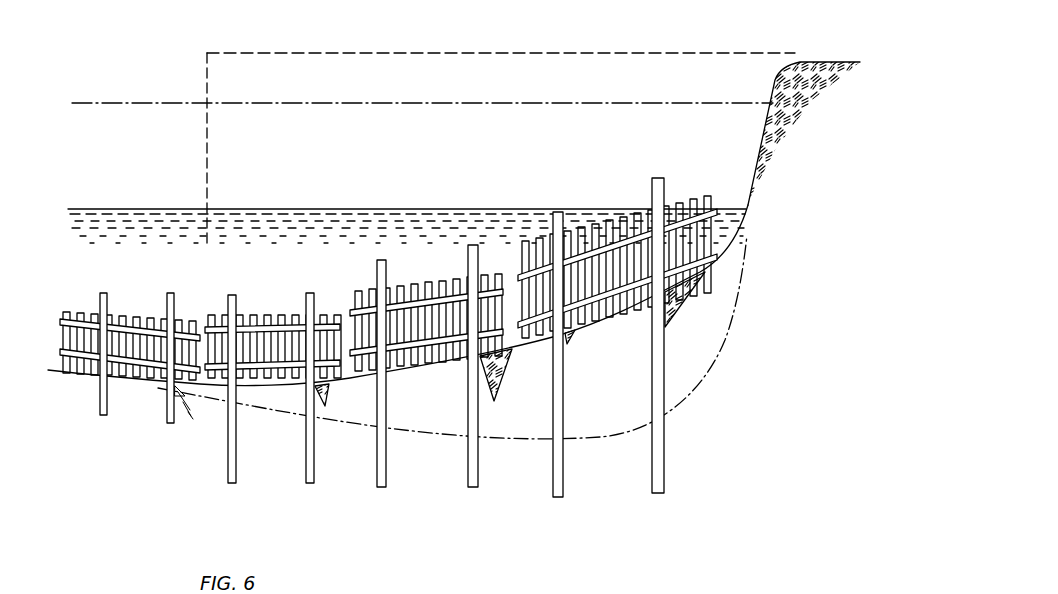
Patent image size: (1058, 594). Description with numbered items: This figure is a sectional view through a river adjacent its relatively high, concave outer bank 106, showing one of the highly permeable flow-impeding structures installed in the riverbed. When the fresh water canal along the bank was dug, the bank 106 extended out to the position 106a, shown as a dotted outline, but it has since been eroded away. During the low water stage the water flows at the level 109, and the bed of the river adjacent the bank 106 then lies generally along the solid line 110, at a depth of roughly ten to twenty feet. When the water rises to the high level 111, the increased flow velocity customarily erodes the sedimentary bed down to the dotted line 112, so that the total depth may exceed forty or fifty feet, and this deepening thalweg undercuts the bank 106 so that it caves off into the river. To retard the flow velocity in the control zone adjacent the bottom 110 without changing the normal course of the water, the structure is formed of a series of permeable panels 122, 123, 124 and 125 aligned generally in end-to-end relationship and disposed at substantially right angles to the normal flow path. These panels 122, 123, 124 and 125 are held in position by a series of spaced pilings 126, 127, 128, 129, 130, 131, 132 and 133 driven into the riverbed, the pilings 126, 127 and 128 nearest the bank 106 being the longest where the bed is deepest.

The outer bank 106 is at (802, 62).
The original bank position 106a is at (207, 50).
The low water level 109 is at (139, 207).
The riverbed line 110 is at (622, 332).
The high water level 111 is at (119, 99).
The eroded bed line 112 is at (636, 433).
The permeable panel 122 is at (628, 207).
The permeable panel 123 is at (443, 275).
The permeable panel 124 is at (291, 306).
The permeable panel 125 is at (156, 307).
The piling 126 is at (658, 177).
The piling 127 is at (557, 211).
The piling 128 is at (473, 244).
The piling 129 is at (377, 262).
The piling 130 is at (310, 292).
The piling 131 is at (232, 294).
The piling 132 is at (170, 292).
The piling 133 is at (103, 292).